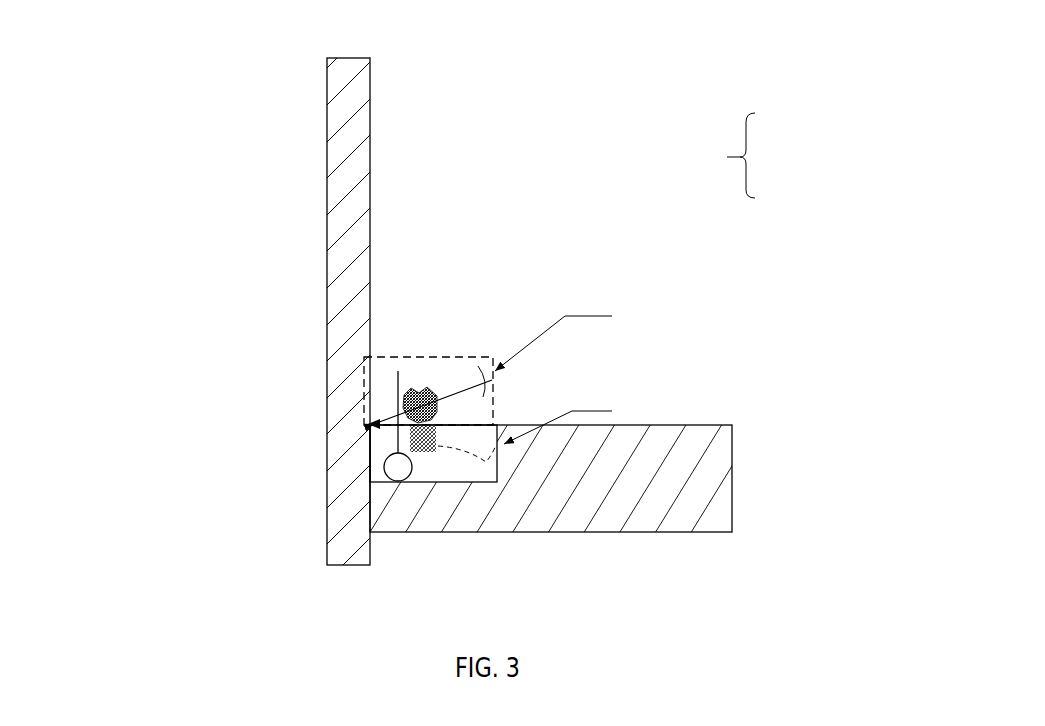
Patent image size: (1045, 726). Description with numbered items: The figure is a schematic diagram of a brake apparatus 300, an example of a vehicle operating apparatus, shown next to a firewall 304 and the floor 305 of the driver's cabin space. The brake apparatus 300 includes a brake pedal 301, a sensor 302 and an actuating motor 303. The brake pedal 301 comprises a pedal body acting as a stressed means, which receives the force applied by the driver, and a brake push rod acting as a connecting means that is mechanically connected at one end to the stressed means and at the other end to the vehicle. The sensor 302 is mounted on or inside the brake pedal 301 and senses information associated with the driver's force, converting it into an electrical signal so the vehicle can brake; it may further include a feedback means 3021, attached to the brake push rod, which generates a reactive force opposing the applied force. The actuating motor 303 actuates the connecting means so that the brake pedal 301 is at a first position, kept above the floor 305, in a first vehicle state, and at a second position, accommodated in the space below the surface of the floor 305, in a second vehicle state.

The brake apparatus 300 is at (946, 45).
The brake pedal 301 is at (390, 345).
The sensor 302 is at (418, 381).
The feedback means 3021 is at (405, 388).
The actuating motor 303 is at (368, 479).
The firewall 304 is at (376, 76).
The floor 305 is at (733, 422).